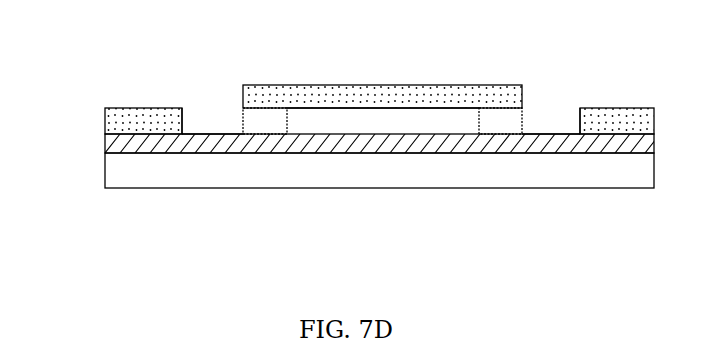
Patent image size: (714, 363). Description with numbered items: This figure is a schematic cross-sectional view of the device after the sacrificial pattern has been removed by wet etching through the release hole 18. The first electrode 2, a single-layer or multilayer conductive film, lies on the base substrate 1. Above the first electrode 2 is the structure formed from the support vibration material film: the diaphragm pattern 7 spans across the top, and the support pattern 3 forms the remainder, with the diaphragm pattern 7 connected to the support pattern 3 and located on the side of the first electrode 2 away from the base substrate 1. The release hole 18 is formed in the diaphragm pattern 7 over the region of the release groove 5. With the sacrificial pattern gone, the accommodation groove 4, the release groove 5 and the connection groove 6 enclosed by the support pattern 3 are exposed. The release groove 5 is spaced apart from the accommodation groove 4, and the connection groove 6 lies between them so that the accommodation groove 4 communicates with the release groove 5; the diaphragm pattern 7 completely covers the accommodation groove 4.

The base substrate 1 is at (95, 170).
The first electrode 2 is at (93, 143).
The support pattern 3 is at (93, 116).
The accommodation groove 4 is at (338, 122).
The release groove 5 is at (210, 127).
The connection groove 6 is at (260, 124).
The diaphragm pattern 7 is at (361, 86).
The release hole 18 is at (205, 87).